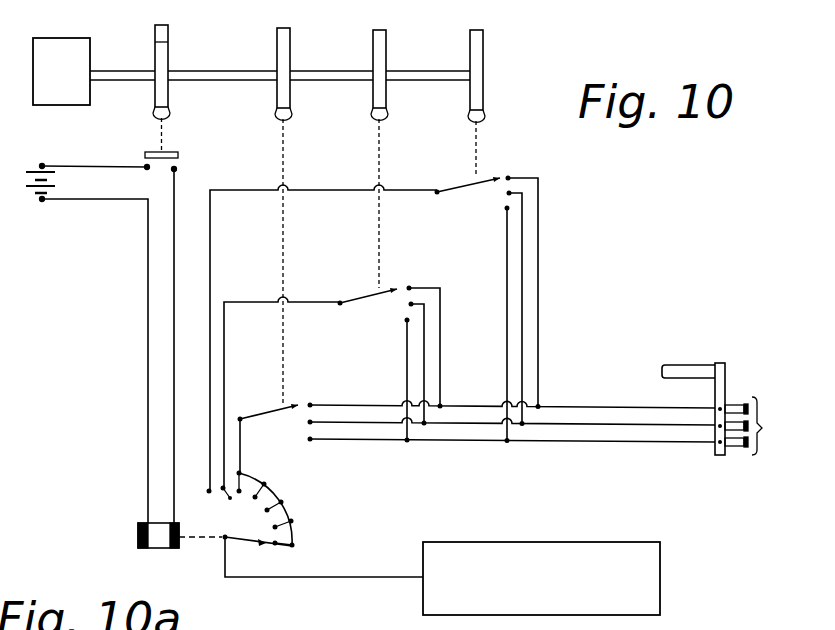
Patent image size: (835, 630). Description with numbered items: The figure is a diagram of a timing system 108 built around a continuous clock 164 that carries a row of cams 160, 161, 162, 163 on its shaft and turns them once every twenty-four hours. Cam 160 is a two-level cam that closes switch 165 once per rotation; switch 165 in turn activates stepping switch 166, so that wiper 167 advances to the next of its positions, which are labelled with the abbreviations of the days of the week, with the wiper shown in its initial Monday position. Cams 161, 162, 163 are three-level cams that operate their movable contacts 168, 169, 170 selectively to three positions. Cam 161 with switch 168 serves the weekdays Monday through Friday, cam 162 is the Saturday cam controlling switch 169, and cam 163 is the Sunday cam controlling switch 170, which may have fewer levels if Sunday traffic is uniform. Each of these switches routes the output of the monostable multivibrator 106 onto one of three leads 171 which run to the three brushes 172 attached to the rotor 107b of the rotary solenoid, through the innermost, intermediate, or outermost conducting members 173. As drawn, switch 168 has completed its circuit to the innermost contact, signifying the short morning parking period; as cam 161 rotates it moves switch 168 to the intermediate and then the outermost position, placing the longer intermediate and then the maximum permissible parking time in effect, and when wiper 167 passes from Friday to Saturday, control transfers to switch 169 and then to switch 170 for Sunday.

The continuous clock 164 is at (63, 37).
The cam 160 is at (168, 43).
The cam 161 is at (290, 47).
The cam 162 is at (386, 45).
The cam 163 is at (483, 43).
The switch 165 is at (182, 157).
The stepping switch 166 is at (155, 550).
The wiper 167 is at (246, 556).
The movable contact 168 is at (290, 403).
The movable contact 169 is at (385, 292).
The movable contact 170 is at (482, 180).
The conductors 171 is at (660, 408).
The brushes 172 is at (745, 447).
The contacts 173 is at (762, 428).
The rotor 107b is at (690, 363).
The timing system 108 is at (655, 257).
The monostable multivibrator 106 is at (634, 578).